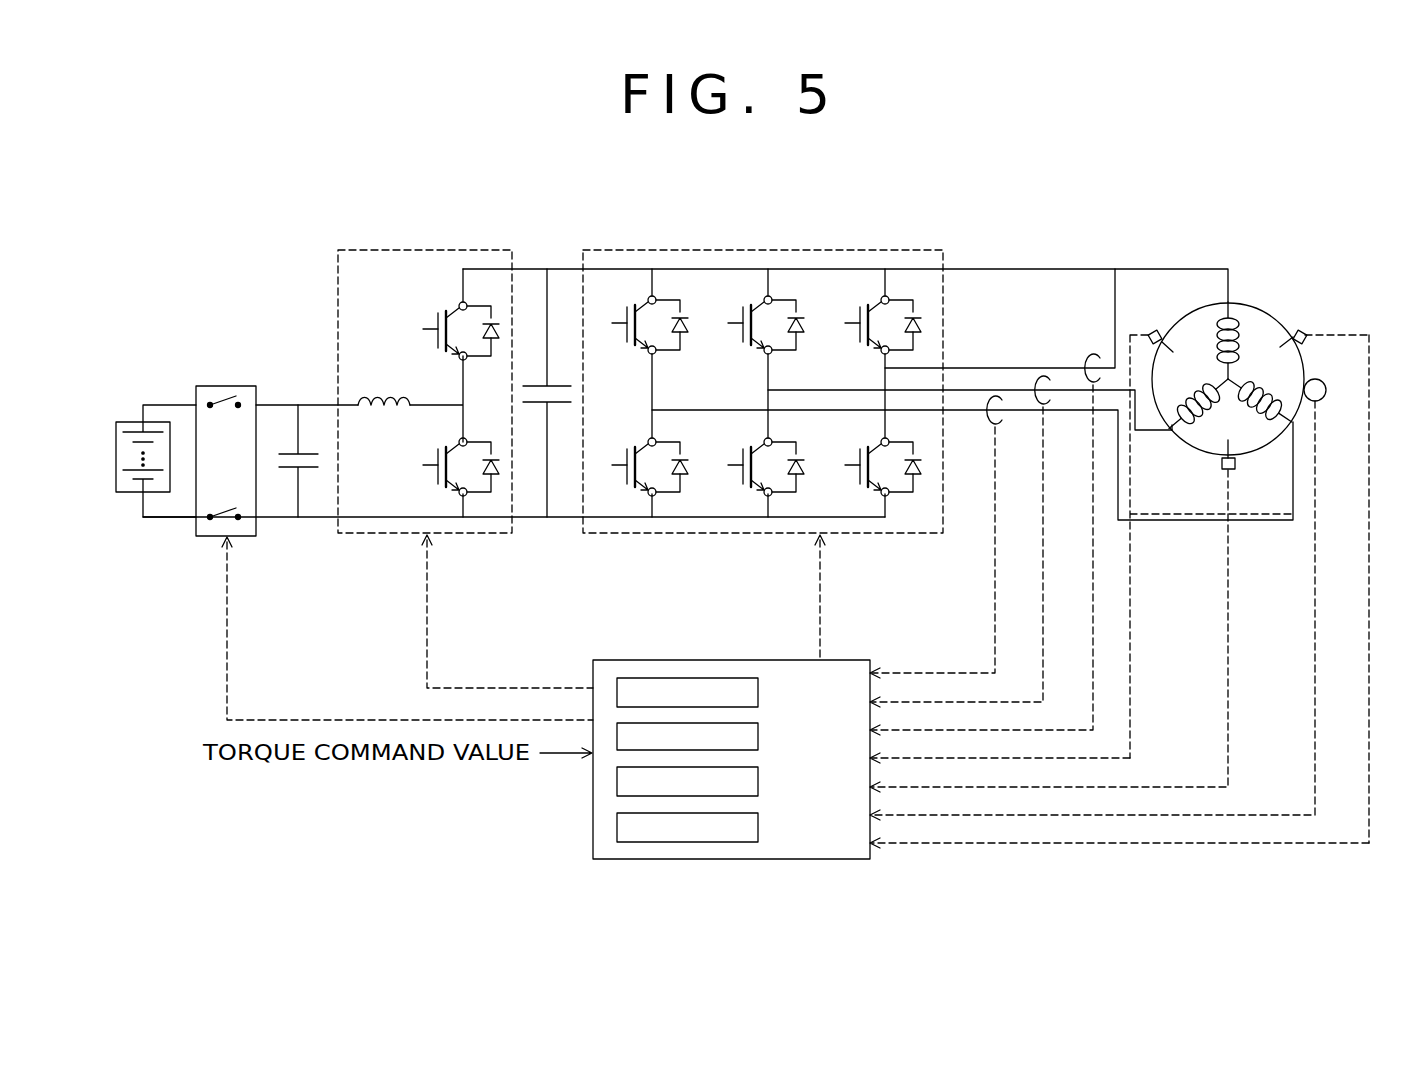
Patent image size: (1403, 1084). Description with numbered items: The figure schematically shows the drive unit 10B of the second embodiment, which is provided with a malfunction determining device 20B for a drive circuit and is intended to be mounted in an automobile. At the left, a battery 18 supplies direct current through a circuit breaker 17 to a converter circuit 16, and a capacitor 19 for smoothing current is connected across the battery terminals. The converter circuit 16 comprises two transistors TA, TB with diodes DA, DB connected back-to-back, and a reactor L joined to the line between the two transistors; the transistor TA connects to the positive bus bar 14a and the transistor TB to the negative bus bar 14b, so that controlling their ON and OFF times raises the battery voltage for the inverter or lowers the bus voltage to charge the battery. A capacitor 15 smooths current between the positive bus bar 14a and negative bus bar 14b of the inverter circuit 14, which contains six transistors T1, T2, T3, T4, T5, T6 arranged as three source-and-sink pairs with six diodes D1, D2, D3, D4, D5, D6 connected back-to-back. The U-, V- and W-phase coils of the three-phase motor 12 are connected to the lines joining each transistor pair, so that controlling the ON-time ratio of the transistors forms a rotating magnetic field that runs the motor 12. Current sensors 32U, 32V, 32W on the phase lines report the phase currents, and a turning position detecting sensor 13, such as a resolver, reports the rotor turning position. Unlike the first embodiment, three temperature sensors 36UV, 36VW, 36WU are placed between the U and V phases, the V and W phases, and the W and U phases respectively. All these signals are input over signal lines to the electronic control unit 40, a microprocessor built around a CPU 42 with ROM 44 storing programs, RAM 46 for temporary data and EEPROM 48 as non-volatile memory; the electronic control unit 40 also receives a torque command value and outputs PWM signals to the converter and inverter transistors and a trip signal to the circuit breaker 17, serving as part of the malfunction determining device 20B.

The drive unit 10B is at (914, 209).
The motor 12 is at (1248, 536).
The turning position detecting sensor 13 is at (1325, 385).
The inverter circuit 14 is at (792, 343).
The positive bus bar 14a is at (568, 267).
The negative bus bar 14b is at (565, 520).
The capacitor 15 is at (557, 404).
The converter circuit 16 is at (425, 343).
The circuit breaker 17 is at (225, 386).
The battery 18 is at (130, 422).
The capacitor 19 is at (308, 469).
The malfunction determining device 20B is at (915, 856).
The current sensor 32U is at (1093, 354).
The current sensor 32V is at (1043, 376).
The current sensor 32W is at (995, 396).
The temperature sensor 36UV is at (1157, 330).
The temperature sensor 36VW is at (1222, 470).
The temperature sensor 36WU is at (1305, 332).
The electronic control unit 40 is at (731, 798).
The CPU 42 is at (758, 693).
The ROM 44 is at (758, 737).
The RAM 46 is at (758, 782).
The EEPROM 48 is at (758, 828).
The reactor L is at (383, 392).
The transistor TA is at (423, 331).
The transistor TB is at (423, 467).
The diode DA is at (493, 300).
The diode DB is at (492, 447).
The transistor T1 is at (613, 325).
The transistor T2 is at (729, 325).
The transistor T3 is at (846, 325).
The transistor T4 is at (613, 467).
The transistor T5 is at (729, 467).
The transistor T6 is at (846, 467).
The diode D1 is at (681, 298).
The diode D2 is at (798, 298).
The diode D3 is at (918, 302).
The diode D4 is at (689, 458).
The diode D5 is at (805, 458).
The diode D6 is at (922, 458).